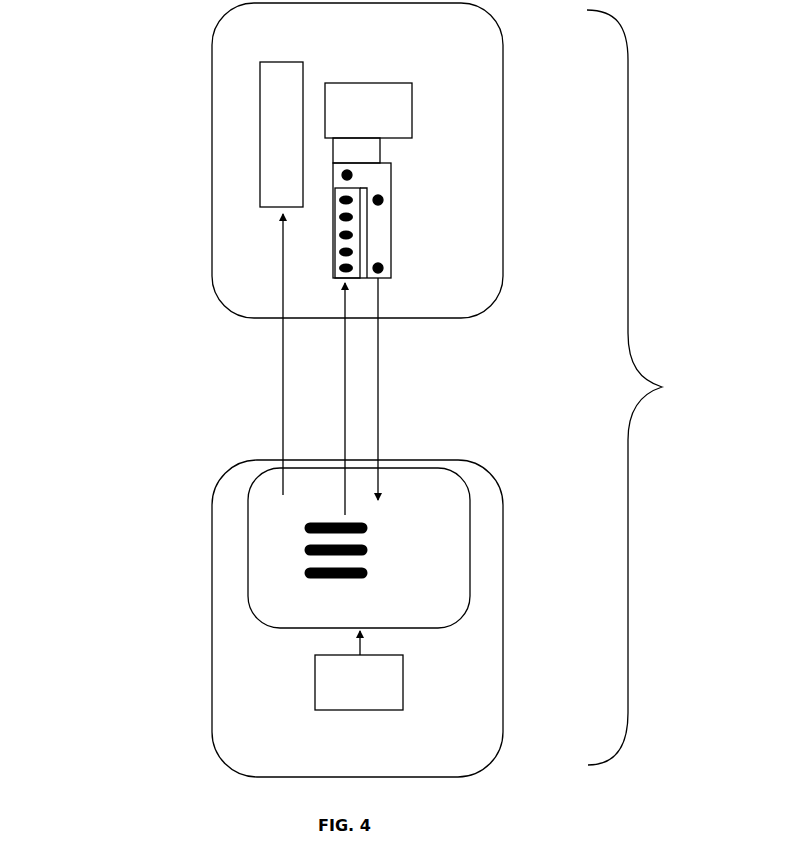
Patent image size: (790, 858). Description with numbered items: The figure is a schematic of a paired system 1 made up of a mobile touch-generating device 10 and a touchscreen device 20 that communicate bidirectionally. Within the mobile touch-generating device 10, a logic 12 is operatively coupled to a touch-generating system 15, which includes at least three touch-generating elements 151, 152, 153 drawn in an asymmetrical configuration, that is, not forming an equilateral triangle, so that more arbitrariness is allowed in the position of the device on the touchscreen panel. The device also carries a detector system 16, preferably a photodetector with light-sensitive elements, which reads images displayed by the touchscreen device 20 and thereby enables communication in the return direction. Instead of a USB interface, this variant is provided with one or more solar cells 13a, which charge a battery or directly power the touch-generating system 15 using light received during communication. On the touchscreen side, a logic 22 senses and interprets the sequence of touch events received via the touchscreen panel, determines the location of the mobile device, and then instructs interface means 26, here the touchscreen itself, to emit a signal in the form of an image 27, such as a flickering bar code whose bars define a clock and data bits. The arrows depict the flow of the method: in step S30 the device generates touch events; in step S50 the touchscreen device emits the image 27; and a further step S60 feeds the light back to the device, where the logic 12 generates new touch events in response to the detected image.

The paired system 1 is at (662, 387).
The mobile touch-generating device 10 is at (192, 245).
The logic 12 is at (412, 93).
The solar cells 13a is at (260, 152).
The touch-generating system 15 is at (390, 232).
The touch-generating element 151 is at (378, 268).
The touch-generating element 152 is at (378, 200).
The touch-generating element 153 is at (347, 175).
The detector system 16 is at (333, 273).
The touchscreen device 20 is at (197, 625).
The logic 22 is at (315, 687).
The interface means 26 is at (287, 635).
The image 27 is at (365, 562).
The step of generating touch events S30 is at (380, 148).
The step S60 display feedback S60 is at (333, 155).
The step of emitting a signal S50 is at (345, 413).